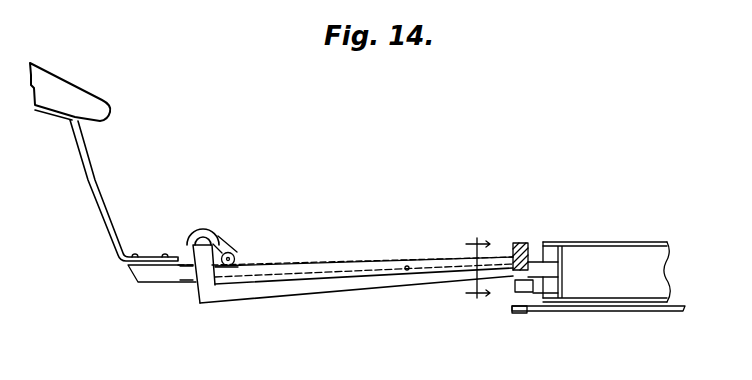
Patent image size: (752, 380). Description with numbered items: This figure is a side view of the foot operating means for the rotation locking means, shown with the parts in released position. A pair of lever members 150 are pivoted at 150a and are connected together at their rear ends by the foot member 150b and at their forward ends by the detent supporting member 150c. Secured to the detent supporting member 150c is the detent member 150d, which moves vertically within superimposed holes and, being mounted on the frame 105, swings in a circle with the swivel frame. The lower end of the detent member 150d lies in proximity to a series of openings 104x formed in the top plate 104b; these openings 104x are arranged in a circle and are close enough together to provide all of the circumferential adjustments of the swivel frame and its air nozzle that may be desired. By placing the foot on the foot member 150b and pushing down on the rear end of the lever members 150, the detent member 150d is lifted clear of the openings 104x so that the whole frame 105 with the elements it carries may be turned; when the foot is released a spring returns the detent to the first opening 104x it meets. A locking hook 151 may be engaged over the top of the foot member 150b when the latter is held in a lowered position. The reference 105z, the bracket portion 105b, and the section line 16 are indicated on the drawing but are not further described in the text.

The locking hook 151 is at (207, 228).
The foot member 150b is at (226, 247).
The actuating rod 105z is at (283, 272).
The lever members 150 is at (268, 288).
The pivot 150a is at (408, 266).
The section line 16 is at (476, 268).
The detent supporting member 150c is at (524, 243).
The bracket 105b is at (541, 262).
The frame 105 is at (566, 262).
The detent member 150d is at (533, 292).
The top plate 104b is at (552, 311).
The openings 104x is at (520, 313).